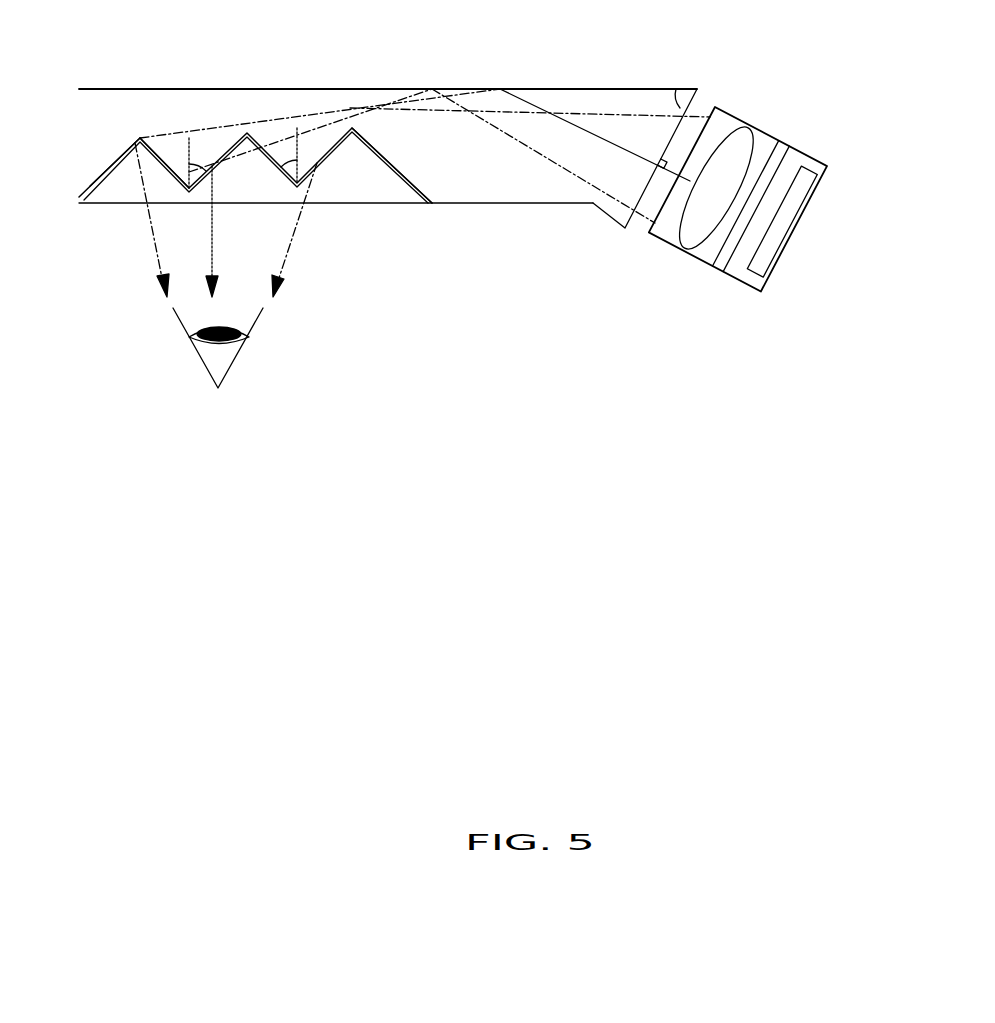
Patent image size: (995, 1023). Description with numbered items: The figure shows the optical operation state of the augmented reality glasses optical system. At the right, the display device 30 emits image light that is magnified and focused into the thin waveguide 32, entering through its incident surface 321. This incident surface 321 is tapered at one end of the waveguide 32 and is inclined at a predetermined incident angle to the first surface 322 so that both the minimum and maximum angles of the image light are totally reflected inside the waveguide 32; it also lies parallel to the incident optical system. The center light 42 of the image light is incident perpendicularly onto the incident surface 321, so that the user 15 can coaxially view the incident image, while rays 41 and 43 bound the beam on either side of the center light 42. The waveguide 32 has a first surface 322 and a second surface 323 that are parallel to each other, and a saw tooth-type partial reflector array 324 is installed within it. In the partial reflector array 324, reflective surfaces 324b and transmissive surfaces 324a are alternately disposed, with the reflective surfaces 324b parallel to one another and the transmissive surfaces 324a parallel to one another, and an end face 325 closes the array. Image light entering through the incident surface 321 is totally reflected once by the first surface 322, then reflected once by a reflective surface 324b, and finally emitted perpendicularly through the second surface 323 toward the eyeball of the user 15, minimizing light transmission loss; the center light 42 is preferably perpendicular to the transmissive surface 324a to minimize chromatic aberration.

The user 15 is at (241, 351).
The display device 30 is at (751, 184).
The waveguide 32 is at (371, 165).
The incident surface 321 is at (632, 232).
The first surface 322 is at (500, 88).
The second surface 323 is at (103, 205).
The partial reflector array 324 is at (240, 155).
The transmissive surface 324a is at (160, 148).
The reflective surface 324b is at (118, 162).
The end face of prism 325 is at (412, 184).
The first light ray 41 is at (626, 89).
The center light 42 is at (556, 124).
The third light ray 43 is at (581, 183).